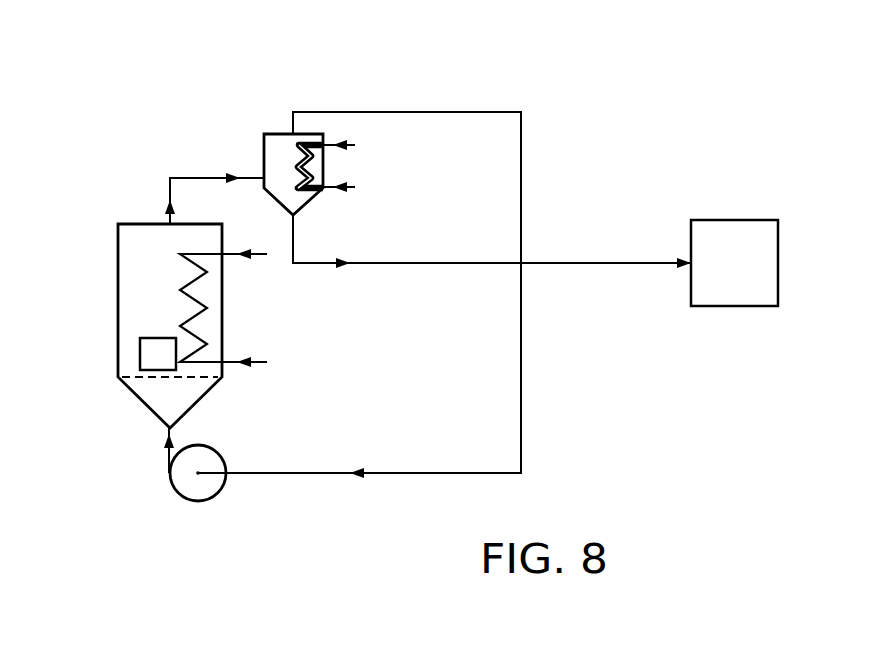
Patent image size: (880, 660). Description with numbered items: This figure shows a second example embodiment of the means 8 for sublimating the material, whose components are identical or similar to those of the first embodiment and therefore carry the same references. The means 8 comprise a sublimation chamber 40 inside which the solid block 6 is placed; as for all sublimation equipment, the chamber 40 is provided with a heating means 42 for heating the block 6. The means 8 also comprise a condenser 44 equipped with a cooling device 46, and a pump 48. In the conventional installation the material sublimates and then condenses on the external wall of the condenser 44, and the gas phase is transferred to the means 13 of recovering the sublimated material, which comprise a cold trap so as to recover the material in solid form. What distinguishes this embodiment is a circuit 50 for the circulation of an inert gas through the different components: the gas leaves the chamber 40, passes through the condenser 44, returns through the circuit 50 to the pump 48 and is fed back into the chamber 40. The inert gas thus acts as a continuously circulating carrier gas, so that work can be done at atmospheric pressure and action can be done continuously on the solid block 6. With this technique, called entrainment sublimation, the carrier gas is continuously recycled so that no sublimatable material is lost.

The means for sublimating the material 8 is at (176, 116).
The sublimation chamber 40 is at (150, 287).
The solid block 6 is at (150, 352).
The heating means 42 is at (255, 362).
The condenser 44 is at (270, 139).
The cooling device 46 is at (350, 143).
The means of recovering the sublimated material 13 is at (731, 237).
The circuit for the circulation of an inert gas 50 is at (522, 400).
The vacuum pump 48 is at (200, 483).